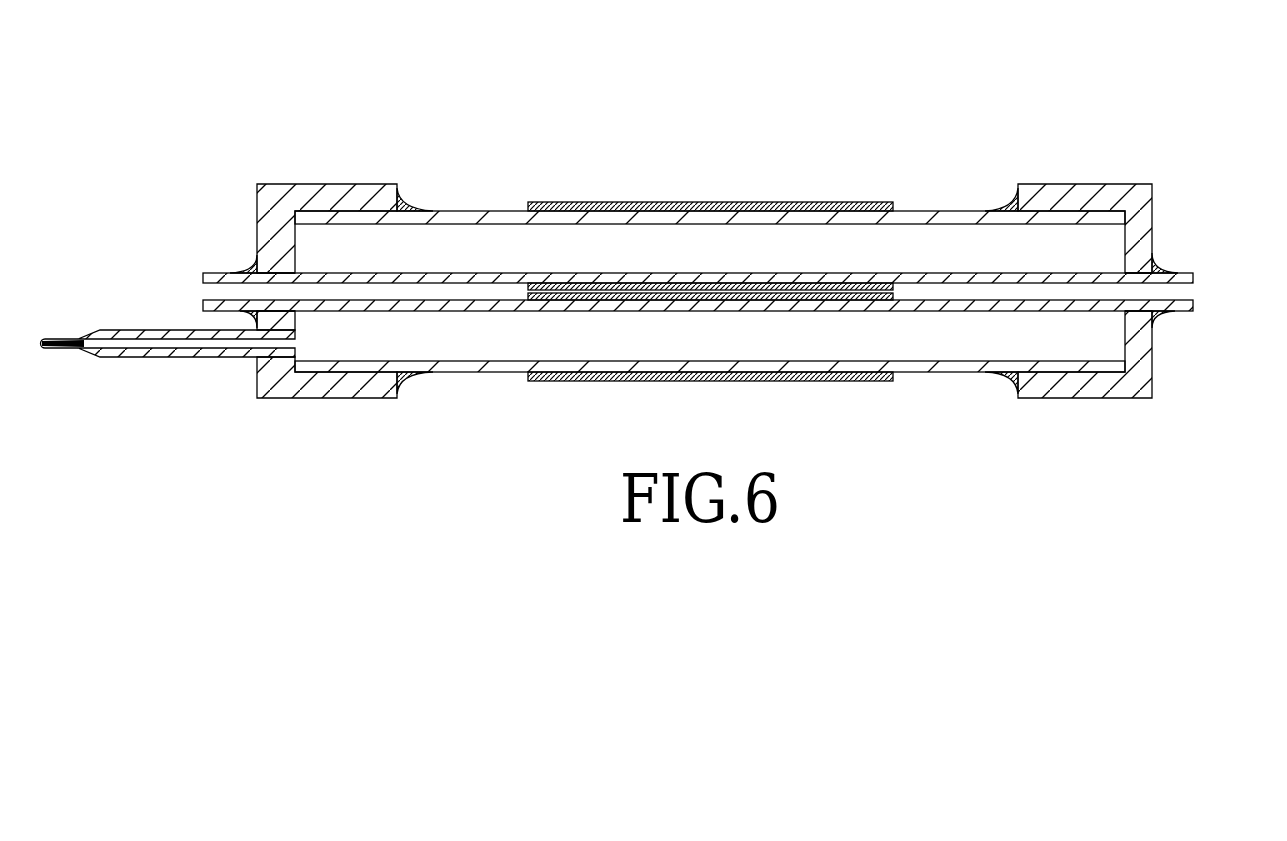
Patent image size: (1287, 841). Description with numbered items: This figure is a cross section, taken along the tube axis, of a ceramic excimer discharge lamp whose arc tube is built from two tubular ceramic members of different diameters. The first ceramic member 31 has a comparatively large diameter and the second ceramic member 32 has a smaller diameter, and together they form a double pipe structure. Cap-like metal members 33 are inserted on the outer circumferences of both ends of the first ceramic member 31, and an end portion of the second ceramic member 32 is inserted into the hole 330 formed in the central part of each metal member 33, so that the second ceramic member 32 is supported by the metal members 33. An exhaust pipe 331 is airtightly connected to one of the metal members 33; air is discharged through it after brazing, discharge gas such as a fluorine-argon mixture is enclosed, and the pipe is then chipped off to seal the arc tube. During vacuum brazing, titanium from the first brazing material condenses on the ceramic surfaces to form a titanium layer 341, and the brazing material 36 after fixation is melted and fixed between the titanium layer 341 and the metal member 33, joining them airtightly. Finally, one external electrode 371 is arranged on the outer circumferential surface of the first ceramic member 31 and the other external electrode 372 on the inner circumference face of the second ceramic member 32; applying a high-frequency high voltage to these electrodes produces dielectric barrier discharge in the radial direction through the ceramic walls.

The first ceramic member 31 is at (934, 211).
The second ceramic member 32 is at (852, 273).
The metal member 33 is at (320, 184).
The brazing material 36 is at (253, 262).
The hole 330 is at (270, 270).
The exhaust pipe 331 is at (150, 331).
The titanium layer 341 is at (235, 268).
The external electrode 371 is at (762, 202).
The external electrode 372 is at (668, 283).